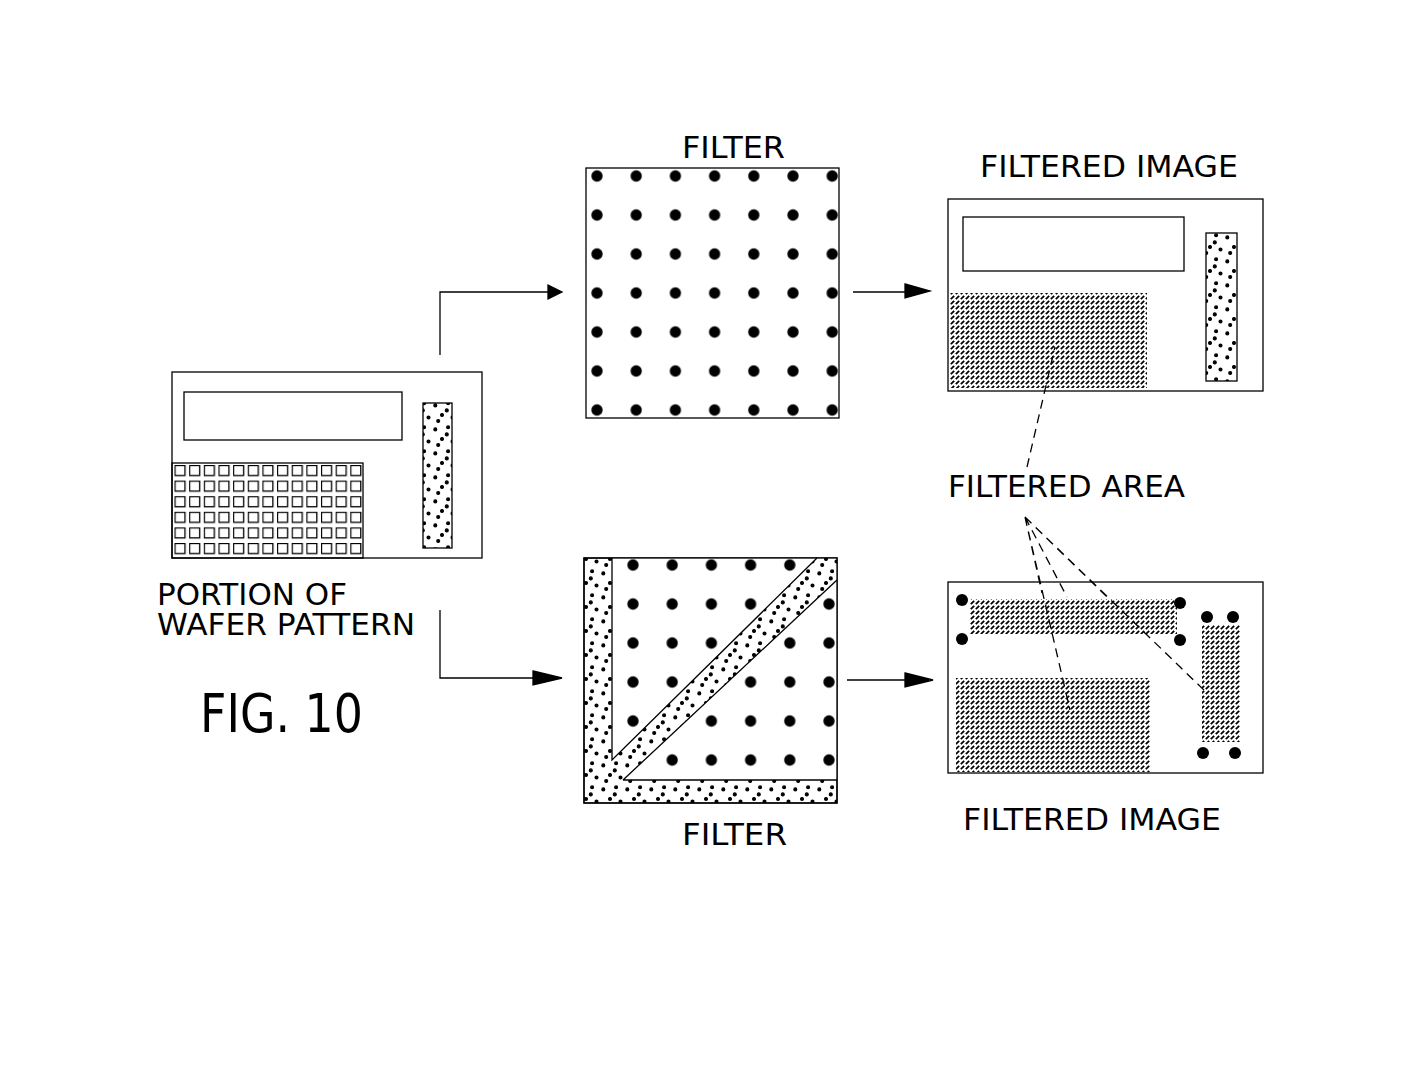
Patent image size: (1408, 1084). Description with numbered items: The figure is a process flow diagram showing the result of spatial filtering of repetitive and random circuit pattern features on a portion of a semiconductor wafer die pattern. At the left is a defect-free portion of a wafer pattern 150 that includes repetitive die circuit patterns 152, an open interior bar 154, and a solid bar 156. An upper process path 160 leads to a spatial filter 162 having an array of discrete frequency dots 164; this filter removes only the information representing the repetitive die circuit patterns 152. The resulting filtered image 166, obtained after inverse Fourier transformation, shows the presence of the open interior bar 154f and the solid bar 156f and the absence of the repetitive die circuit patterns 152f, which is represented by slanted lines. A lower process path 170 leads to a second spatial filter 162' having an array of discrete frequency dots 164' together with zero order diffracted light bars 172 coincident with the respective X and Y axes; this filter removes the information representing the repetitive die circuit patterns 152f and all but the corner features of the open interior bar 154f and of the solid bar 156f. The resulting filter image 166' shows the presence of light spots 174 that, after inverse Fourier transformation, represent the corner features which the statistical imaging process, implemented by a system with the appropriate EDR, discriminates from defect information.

The wafer pattern 150 is at (228, 381).
The repetitive die circuit patterns 152 is at (360, 502).
The open interior bar 154 is at (313, 413).
The solid bar 156 is at (440, 468).
The process path 160 is at (480, 290).
The spatial filter 162 is at (718, 250).
The discrete frequency dots 164 is at (700, 250).
The filtered image 166 is at (1131, 241).
The open interior bar 154f is at (1147, 597).
The repetitive die circuit patterns 152f is at (971, 389).
The solid bar 156f is at (1240, 295).
The process path 170 is at (492, 682).
The spatial filter 162' is at (710, 636).
The discrete frequency dots 164' is at (724, 624).
The zero order diffracted light bars 172 is at (642, 760).
The filter image 166' is at (1170, 673).
The light spots 174 is at (956, 639).